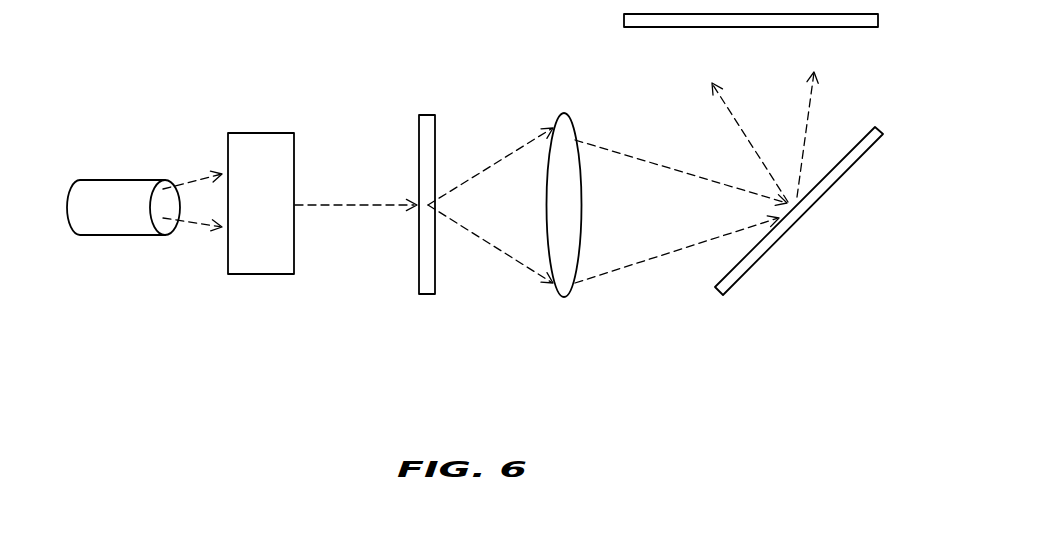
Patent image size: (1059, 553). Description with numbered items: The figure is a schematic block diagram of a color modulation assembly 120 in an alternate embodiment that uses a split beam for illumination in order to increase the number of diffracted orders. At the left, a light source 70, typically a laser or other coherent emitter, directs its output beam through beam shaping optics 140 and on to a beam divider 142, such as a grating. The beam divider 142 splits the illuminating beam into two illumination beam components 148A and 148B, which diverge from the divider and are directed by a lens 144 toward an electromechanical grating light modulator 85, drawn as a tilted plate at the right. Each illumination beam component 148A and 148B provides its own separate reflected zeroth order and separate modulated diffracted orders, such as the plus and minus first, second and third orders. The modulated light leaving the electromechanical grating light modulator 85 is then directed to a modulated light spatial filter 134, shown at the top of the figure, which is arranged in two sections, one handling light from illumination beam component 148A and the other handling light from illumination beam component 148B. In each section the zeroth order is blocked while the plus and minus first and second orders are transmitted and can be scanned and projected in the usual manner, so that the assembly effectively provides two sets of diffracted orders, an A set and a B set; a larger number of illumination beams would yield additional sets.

The modulation assembly 120 is at (150, 47).
The light source 70 is at (120, 232).
The beam shaping optics 140 is at (272, 274).
The beam divider 142 is at (420, 295).
The illumination beam component 148A is at (525, 142).
The illumination beam component 148B is at (518, 262).
The lens 144 is at (570, 297).
The electromechanical grating light modulator 85 is at (753, 267).
The modulated light spatial filter 134 is at (620, 23).